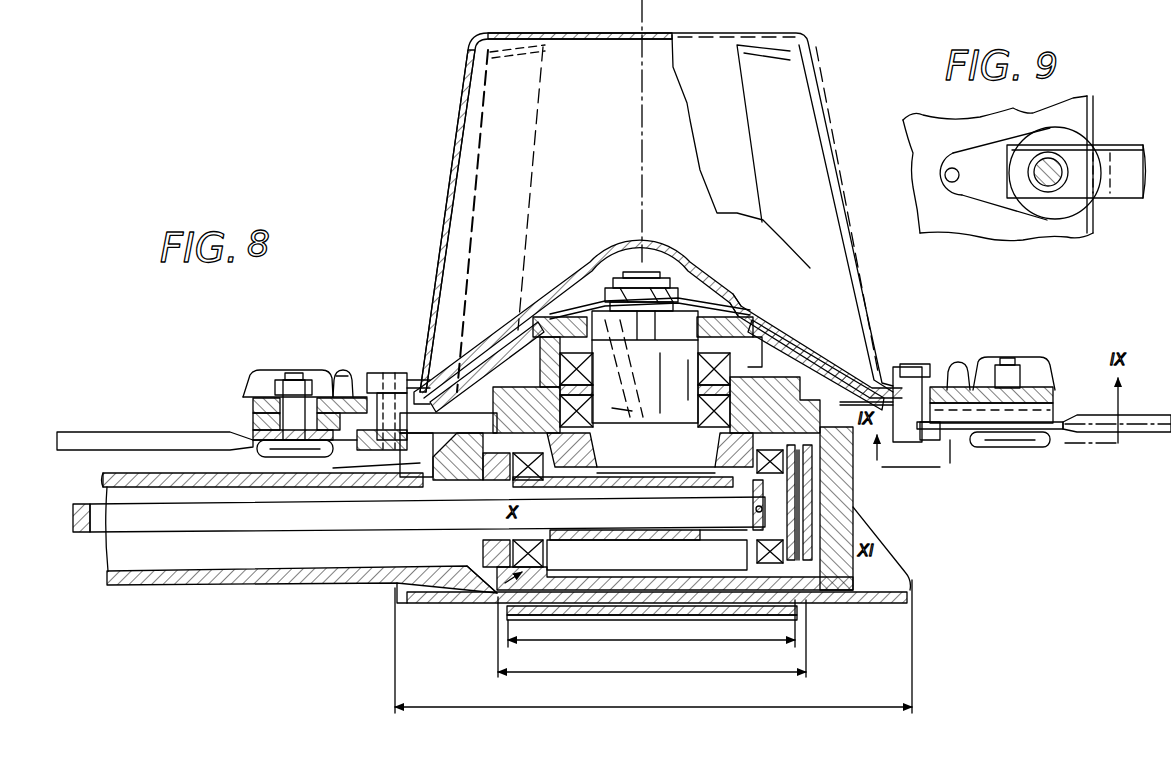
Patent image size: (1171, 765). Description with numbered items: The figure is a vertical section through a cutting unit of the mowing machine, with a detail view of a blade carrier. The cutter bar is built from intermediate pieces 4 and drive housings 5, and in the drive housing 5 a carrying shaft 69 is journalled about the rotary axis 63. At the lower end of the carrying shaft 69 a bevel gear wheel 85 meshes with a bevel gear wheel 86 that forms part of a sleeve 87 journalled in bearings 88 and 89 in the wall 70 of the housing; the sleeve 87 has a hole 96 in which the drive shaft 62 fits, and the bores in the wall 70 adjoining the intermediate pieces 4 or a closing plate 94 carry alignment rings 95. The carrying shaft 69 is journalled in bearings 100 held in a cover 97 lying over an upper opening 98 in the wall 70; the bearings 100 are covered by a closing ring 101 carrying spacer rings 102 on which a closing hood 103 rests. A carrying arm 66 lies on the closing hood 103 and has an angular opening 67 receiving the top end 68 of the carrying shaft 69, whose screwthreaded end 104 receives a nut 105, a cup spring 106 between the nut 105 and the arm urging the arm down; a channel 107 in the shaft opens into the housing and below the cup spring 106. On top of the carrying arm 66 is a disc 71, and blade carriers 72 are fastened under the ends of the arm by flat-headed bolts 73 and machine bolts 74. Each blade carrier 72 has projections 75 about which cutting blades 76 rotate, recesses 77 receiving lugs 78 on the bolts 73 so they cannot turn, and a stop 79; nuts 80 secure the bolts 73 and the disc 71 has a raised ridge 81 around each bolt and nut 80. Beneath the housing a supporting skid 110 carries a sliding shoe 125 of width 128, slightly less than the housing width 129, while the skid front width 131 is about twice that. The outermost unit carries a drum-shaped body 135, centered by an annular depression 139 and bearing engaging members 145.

In FIG. 8, the intermediate piece 4 is at (173, 587).
In FIG. 8, the drive housing 5 is at (497, 600).
In FIG. 8, the drive shaft 62 is at (83, 503).
In FIG. 8, the rotary axis 63 is at (640, 137).
In FIG. 8, the carrying arm 66 is at (783, 322).
In FIG. 9, the carrying arm 66 is at (923, 130).
In FIG. 8, the angular opening 67 is at (713, 317).
In FIG. 8, the top end 68 is at (673, 320).
In FIG. 8, the carrying shaft 69 is at (613, 423).
In FIG. 8, the wall 70 is at (583, 587).
In FIG. 8, the disc 71 is at (346, 362).
In FIG. 8, the blade carrier 72 is at (378, 452).
In FIG. 9, the blade carrier 72 is at (987, 212).
In FIG. 8, the flat-headed bolt 73 is at (293, 373).
In FIG. 9, the flat-headed bolt 73 is at (1037, 200).
In FIG. 8, the machine bolt 74 is at (387, 373).
In FIG. 9, the machine bolt 74 is at (943, 175).
In FIG. 9, the projection 75 is at (1057, 163).
In FIG. 8, the cutting blade 76 is at (85, 432).
In FIG. 9, the cutting blade 76 is at (1133, 153).
In FIG. 9, the recess 77 is at (1020, 163).
In FIG. 8, the lug 78 is at (253, 423).
In FIG. 9, the lug 78 is at (990, 160).
In FIG. 8, the stop 79 is at (932, 442).
In FIG. 9, the stop 79 is at (972, 187).
In FIG. 8, the nut 80 is at (277, 387).
In FIG. 8, the raised ridge 81 is at (328, 368).
In FIG. 8, the bevel gear wheel 85 is at (677, 450).
In FIG. 8, the bevel gear wheel 86 is at (720, 556).
In FIG. 8, the sleeve 87 is at (657, 535).
In FIG. 8, the bearing 88 is at (543, 553).
In FIG. 8, the bearing 89 is at (773, 603).
In FIG. 8, the closing plate 94 is at (848, 476).
In FIG. 8, the alignment ring 95 is at (485, 548).
In FIG. 8, the hole 96 is at (733, 506).
In FIG. 8, the cover 97 is at (540, 370).
In FIG. 8, the upper opening 98 is at (493, 423).
In FIG. 8, the bearing 100 is at (745, 378).
In FIG. 8, the closing ring 101 is at (683, 352).
In FIG. 8, the spacer ring 102 is at (525, 322).
In FIG. 8, the closing hood 103 is at (805, 340).
In FIG. 8, the screwthreaded end 104 is at (660, 272).
In FIG. 8, the nut 105 is at (627, 270).
In FIG. 8, the cup spring 106 is at (575, 310).
In FIG. 8, the channel 107 is at (635, 407).
In FIG. 8, the supporting skid 110 is at (892, 565).
In FIG. 8, the sliding shoe 125 is at (805, 605).
In FIG. 8, the width 128 is at (647, 642).
In FIG. 8, the width 129 is at (708, 653).
In FIG. 8, the width 131 is at (660, 709).
In FIG. 8, the body 135 is at (834, 78).
In FIG. 8, the annular depression 139 is at (750, 297).
In FIG. 8, the engaging member 145 is at (497, 86).